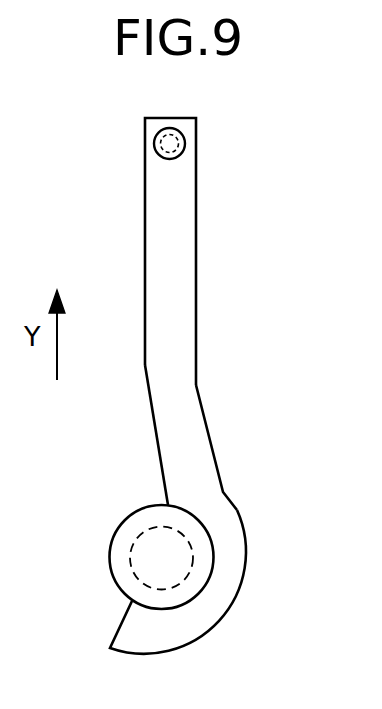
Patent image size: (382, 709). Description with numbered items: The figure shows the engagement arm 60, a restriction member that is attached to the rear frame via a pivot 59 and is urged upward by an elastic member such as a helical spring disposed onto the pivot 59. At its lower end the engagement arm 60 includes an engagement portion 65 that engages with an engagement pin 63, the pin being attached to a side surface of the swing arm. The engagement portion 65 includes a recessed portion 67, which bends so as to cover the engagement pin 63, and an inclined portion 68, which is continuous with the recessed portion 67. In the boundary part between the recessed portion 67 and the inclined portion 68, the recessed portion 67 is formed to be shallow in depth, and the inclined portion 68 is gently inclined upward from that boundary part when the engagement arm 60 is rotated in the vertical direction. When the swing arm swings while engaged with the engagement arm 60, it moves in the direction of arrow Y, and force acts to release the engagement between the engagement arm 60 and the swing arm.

The pivot 59 is at (175, 143).
The engagement arm 60 is at (187, 263).
The engagement pin 63 is at (145, 561).
The engagement portion 65 is at (232, 573).
The recessed portion 67 is at (203, 586).
The inclined portion 68 is at (165, 456).